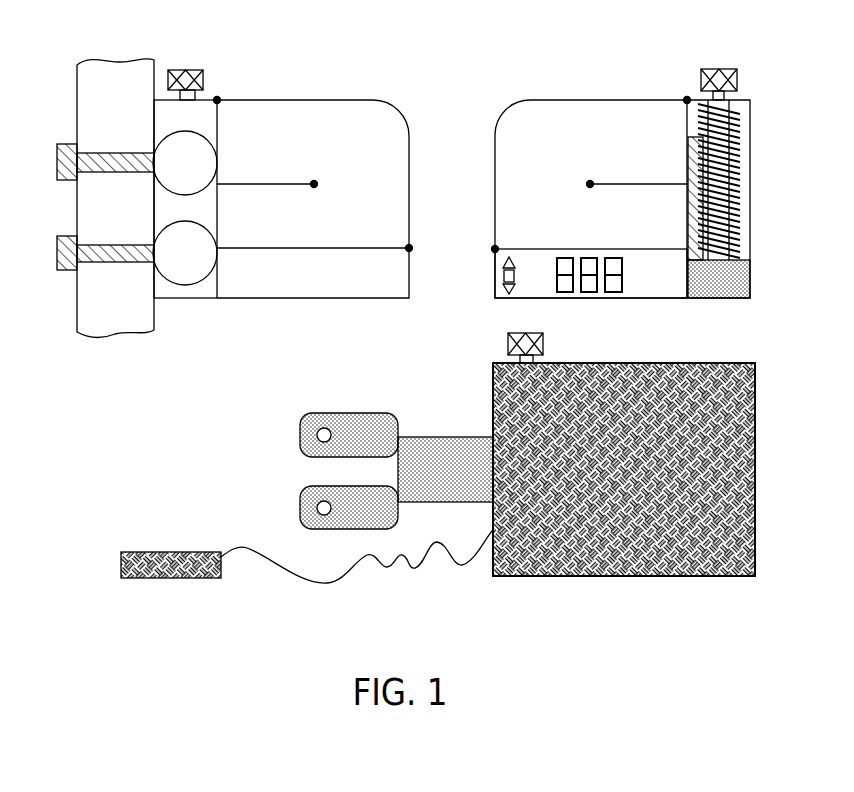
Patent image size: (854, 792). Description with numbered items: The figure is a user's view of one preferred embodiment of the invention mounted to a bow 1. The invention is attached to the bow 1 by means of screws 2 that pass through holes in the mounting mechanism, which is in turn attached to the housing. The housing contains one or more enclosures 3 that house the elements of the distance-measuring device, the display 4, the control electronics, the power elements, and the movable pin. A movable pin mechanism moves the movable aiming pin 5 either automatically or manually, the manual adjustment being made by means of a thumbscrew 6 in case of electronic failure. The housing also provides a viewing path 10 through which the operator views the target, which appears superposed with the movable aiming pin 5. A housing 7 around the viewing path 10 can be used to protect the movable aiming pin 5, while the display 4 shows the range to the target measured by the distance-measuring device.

The bow 1 is at (100, 316).
The screws 2 is at (105, 174).
The enclosure 3 is at (215, 300).
The display 4 is at (652, 284).
The movable aiming pin 5 is at (262, 182).
The thumbscrew 6 is at (723, 69).
The housing 7 is at (411, 84).
The viewing path 10 is at (315, 118).